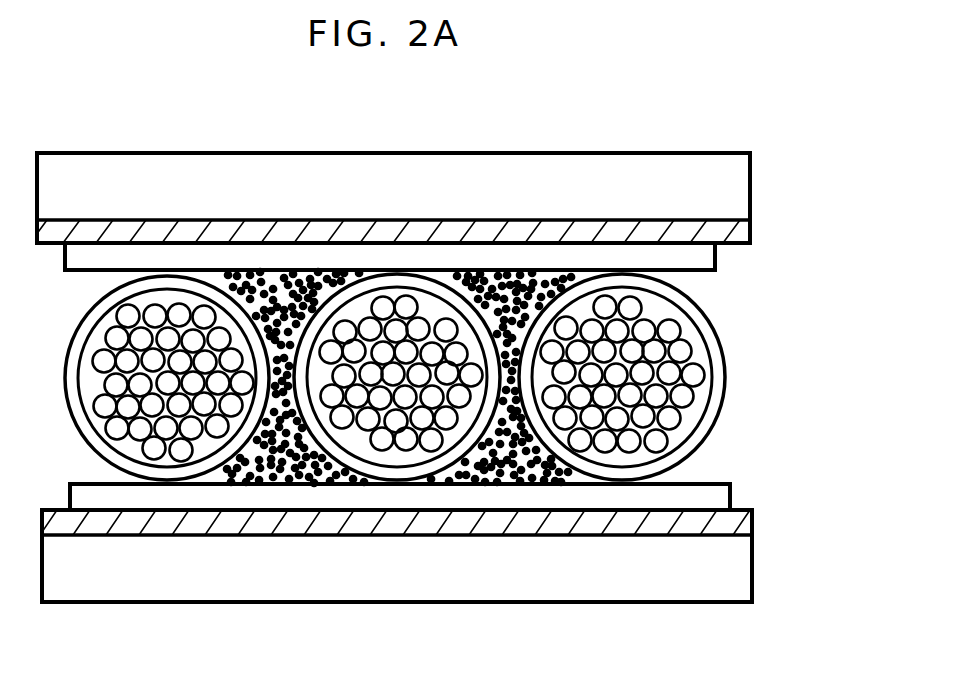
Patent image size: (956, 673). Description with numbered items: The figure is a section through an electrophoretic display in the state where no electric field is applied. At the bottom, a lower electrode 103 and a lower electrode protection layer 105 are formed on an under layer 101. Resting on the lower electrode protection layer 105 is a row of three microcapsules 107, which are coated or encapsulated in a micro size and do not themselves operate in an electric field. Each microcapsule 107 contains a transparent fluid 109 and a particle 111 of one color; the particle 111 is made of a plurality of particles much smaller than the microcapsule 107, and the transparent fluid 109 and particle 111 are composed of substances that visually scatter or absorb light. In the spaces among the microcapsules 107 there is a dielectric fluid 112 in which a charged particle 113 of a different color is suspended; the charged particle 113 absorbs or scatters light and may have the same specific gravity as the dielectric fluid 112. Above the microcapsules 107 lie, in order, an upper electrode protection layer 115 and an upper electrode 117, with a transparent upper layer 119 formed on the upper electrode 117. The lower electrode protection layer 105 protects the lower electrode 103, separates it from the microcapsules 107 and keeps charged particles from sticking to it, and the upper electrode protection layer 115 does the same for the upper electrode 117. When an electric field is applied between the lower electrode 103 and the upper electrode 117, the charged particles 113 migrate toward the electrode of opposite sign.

The under layer 101 is at (732, 572).
The lower electrode 103 is at (732, 521).
The lower electrode protection layer 105 is at (713, 494).
The microcapsule 107 is at (716, 378).
The transparent fluid 109 is at (692, 352).
The particle 111 is at (710, 318).
The dielectric fluid 112 is at (257, 490).
The charged particle 113 is at (275, 270).
The upper electrode protection layer 115 is at (700, 259).
The upper electrode 117 is at (733, 231).
The transparent upper layer 119 is at (735, 178).